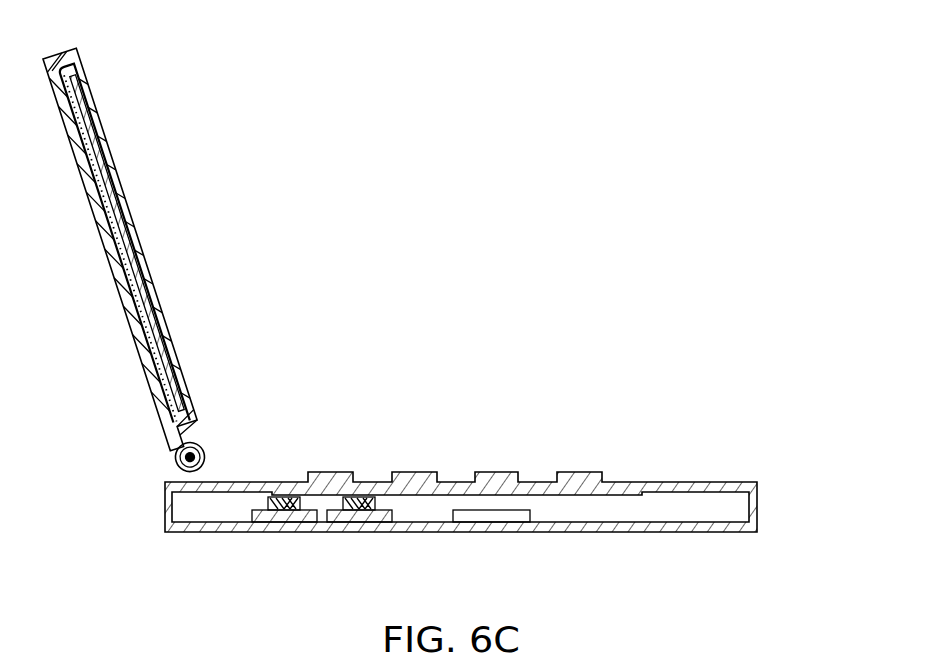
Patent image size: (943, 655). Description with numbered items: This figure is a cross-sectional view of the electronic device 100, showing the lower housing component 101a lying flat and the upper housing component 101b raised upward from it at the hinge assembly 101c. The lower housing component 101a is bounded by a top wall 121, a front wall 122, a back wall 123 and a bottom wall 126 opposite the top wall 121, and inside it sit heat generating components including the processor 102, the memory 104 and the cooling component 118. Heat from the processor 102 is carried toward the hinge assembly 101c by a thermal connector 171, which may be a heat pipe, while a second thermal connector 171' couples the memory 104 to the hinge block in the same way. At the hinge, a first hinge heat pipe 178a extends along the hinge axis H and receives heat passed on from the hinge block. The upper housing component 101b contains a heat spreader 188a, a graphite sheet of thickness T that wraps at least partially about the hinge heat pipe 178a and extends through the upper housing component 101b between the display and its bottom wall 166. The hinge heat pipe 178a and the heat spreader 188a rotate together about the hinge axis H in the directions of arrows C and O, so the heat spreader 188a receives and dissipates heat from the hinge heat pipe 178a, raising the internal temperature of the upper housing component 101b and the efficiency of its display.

The upper housing component 101b is at (45, 52).
The lower housing component 101a is at (768, 540).
The hinge assembly 101c is at (238, 443).
The bottom wall 166 is at (108, 262).
The first hinge heat pipe 178a is at (203, 436).
The heat spreader 188a is at (205, 460).
The thermal connector 171 is at (381, 471).
The second thermal connector 171' is at (304, 471).
The top wall 121 is at (685, 482).
The front wall 122 is at (758, 491).
The back wall 123 is at (168, 510).
The bottom wall 126 is at (230, 532).
The memory 104 is at (287, 523).
The processor 102 is at (356, 523).
The cooling component 118 is at (521, 519).
The electronic device 100 is at (484, 574).
The thickness T is at (166, 438).
The hinge axis H is at (181, 466).
The arrow O is at (326, 398).
The arrow C is at (382, 386).